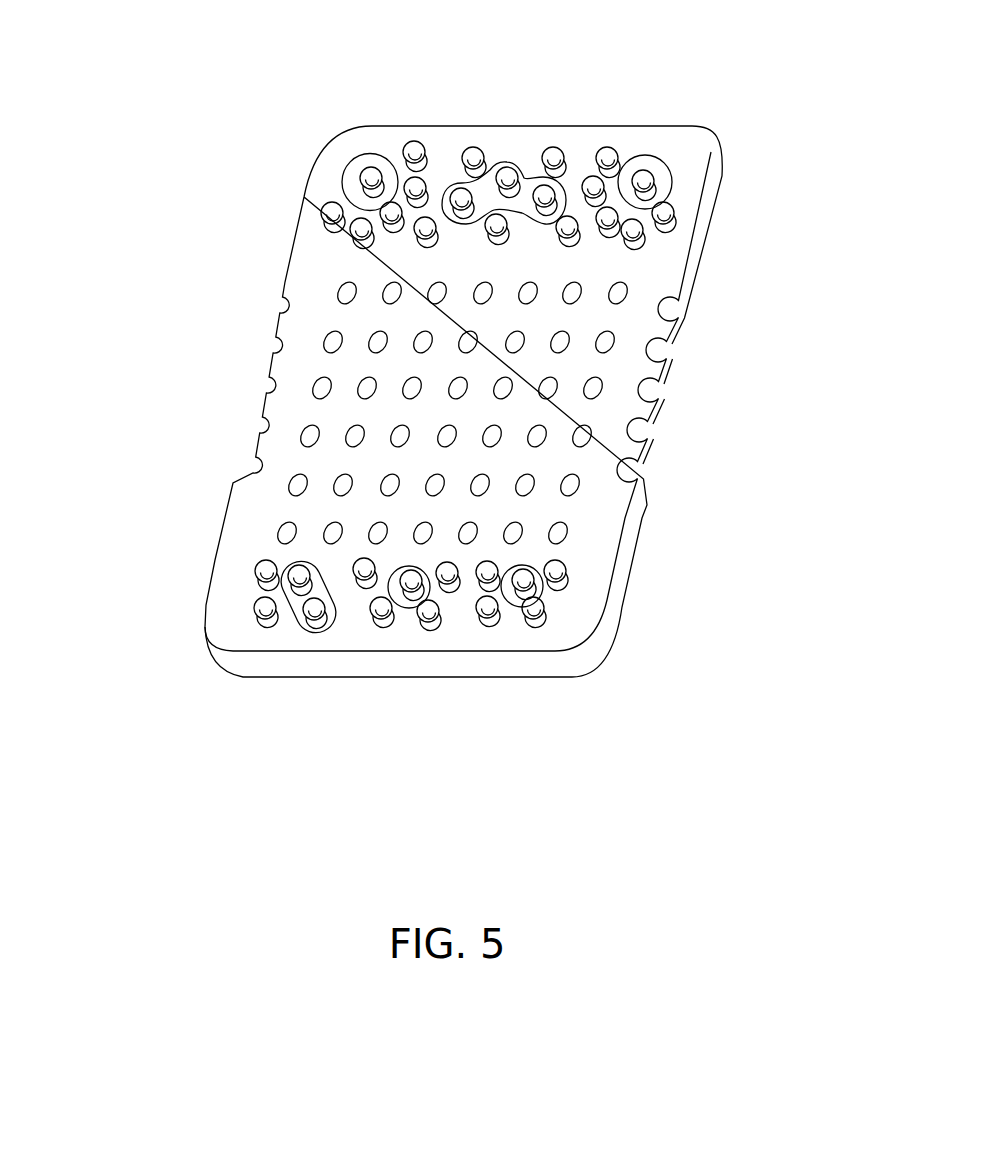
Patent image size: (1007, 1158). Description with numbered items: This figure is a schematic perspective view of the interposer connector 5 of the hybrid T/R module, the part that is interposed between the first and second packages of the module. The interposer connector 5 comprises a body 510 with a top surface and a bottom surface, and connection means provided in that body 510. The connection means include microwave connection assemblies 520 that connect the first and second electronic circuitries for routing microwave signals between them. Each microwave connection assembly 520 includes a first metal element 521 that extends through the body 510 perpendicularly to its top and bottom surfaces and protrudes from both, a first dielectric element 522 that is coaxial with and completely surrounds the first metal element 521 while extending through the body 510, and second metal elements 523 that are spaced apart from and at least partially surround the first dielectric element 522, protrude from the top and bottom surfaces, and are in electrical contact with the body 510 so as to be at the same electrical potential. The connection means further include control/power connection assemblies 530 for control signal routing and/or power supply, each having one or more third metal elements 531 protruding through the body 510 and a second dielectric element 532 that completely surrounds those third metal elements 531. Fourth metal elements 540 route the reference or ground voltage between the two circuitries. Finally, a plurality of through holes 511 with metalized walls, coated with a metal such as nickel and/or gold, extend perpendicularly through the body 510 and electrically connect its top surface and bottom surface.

The interposer connector 5 is at (233, 153).
The body 510 is at (623, 543).
The through holes 511 is at (293, 483).
The microwave connection assemblies 520 is at (353, 157).
The first metal element 521 is at (387, 170).
The first dielectric element 522 is at (342, 180).
The second metal elements 523 is at (333, 204).
The control/power connection assemblies 530 is at (510, 153).
The third metal elements 531 is at (527, 184).
The second dielectric element 532 is at (538, 180).
The fourth metal elements 540 is at (255, 591).